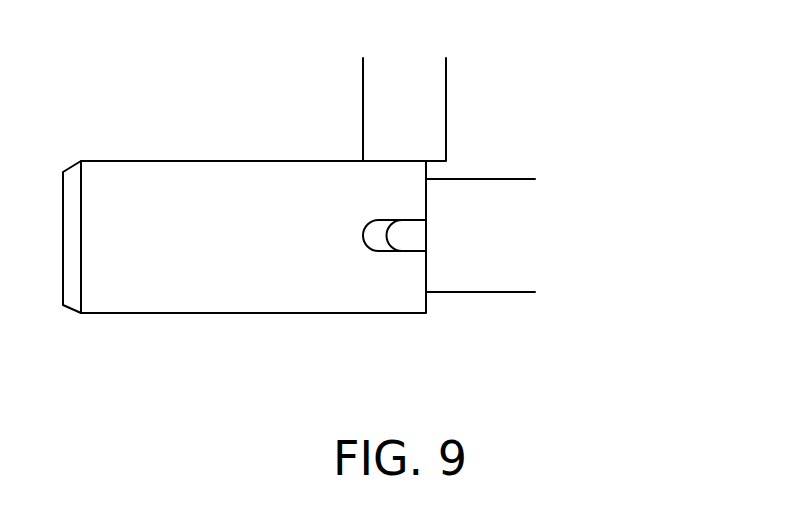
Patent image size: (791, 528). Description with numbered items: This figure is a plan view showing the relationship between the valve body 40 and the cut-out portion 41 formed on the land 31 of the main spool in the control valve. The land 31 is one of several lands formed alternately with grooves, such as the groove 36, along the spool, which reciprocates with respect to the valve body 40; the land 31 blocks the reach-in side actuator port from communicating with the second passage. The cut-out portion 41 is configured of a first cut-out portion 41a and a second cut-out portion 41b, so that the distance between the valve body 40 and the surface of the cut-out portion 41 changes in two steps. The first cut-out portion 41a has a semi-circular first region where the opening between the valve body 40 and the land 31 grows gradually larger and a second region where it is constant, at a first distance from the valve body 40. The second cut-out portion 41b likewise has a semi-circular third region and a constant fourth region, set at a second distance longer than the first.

The land 31 is at (210, 288).
The valve body 40 is at (428, 97).
The cut-out portion 41 is at (533, 206).
The first cut-out portion 41a is at (383, 225).
The second cut-out portion 41b is at (412, 235).
The groove 36 is at (498, 275).